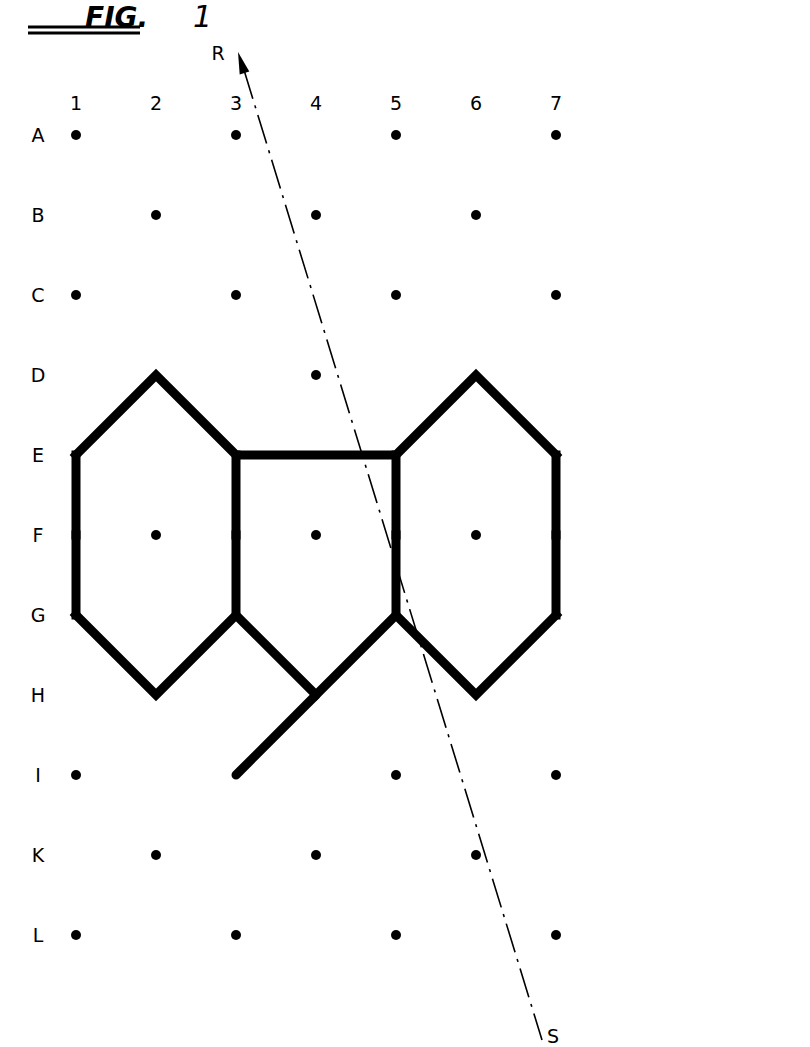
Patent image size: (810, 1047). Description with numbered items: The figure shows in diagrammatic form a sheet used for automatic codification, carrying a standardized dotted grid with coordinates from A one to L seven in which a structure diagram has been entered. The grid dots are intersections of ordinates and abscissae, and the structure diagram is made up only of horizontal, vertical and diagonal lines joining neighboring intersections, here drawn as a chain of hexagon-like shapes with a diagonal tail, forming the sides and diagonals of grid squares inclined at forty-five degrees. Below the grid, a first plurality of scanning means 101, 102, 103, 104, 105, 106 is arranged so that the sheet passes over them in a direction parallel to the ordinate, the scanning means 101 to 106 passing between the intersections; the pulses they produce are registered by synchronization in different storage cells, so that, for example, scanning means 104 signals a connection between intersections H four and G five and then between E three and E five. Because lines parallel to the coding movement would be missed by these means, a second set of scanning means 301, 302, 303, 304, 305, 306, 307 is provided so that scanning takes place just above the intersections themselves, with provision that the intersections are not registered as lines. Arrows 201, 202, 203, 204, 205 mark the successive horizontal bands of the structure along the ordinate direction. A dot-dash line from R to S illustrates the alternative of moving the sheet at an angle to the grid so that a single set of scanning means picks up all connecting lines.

The scanning means 101 is at (116, 982).
The scanning means 102 is at (196, 982).
The scanning means 103 is at (276, 982).
The scanning means 104 is at (356, 982).
The scanning means 105 is at (436, 982).
The scanning means 106 is at (516, 982).
The pattern row band D-E 201 is at (603, 414).
The pattern row band E-F 202 is at (603, 495).
The pattern row band F-G 203 is at (603, 575).
The pattern row band G-H 204 is at (603, 654).
The pattern row band H-I 205 is at (603, 736).
The scanning means of second set 301 is at (76, 960).
The scanning means of second set 302 is at (156, 960).
The scanning means of second set 303 is at (236, 960).
The scanning means of second set 304 is at (316, 960).
The scanning means of second set 305 is at (396, 960).
The scanning means of second set 306 is at (476, 960).
The scanning means of second set 307 is at (556, 960).